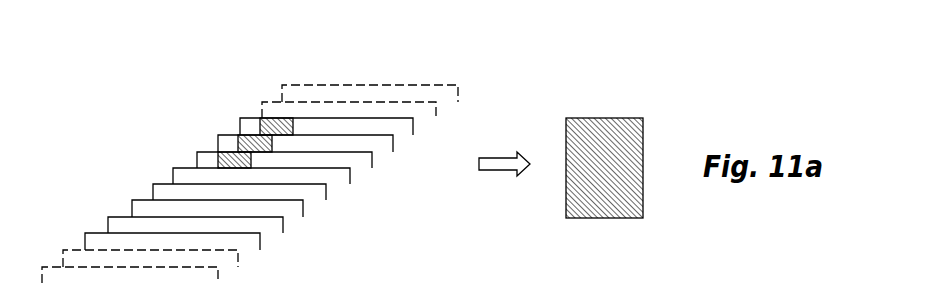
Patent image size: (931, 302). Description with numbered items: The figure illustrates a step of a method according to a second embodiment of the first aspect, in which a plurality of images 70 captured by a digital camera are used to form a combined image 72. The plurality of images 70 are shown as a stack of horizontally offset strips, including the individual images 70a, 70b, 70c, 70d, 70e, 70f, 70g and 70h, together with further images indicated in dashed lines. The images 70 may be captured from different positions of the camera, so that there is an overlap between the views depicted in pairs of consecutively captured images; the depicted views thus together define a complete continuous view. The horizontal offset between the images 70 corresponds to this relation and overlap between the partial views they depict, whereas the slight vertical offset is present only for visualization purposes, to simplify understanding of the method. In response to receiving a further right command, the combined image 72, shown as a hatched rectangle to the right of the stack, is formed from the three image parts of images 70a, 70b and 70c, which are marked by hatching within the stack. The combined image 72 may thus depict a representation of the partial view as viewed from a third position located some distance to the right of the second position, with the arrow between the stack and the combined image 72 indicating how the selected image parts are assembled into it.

The plurality of images 70 is at (249, 152).
The image 70a is at (240, 117).
The image 70b is at (217, 133).
The image 70c is at (197, 150).
The image 70d is at (173, 166).
The image 70e is at (151, 182).
The image 70f is at (303, 218).
The image 70g is at (283, 235).
The image 70h is at (262, 252).
The combined image 72 is at (632, 218).